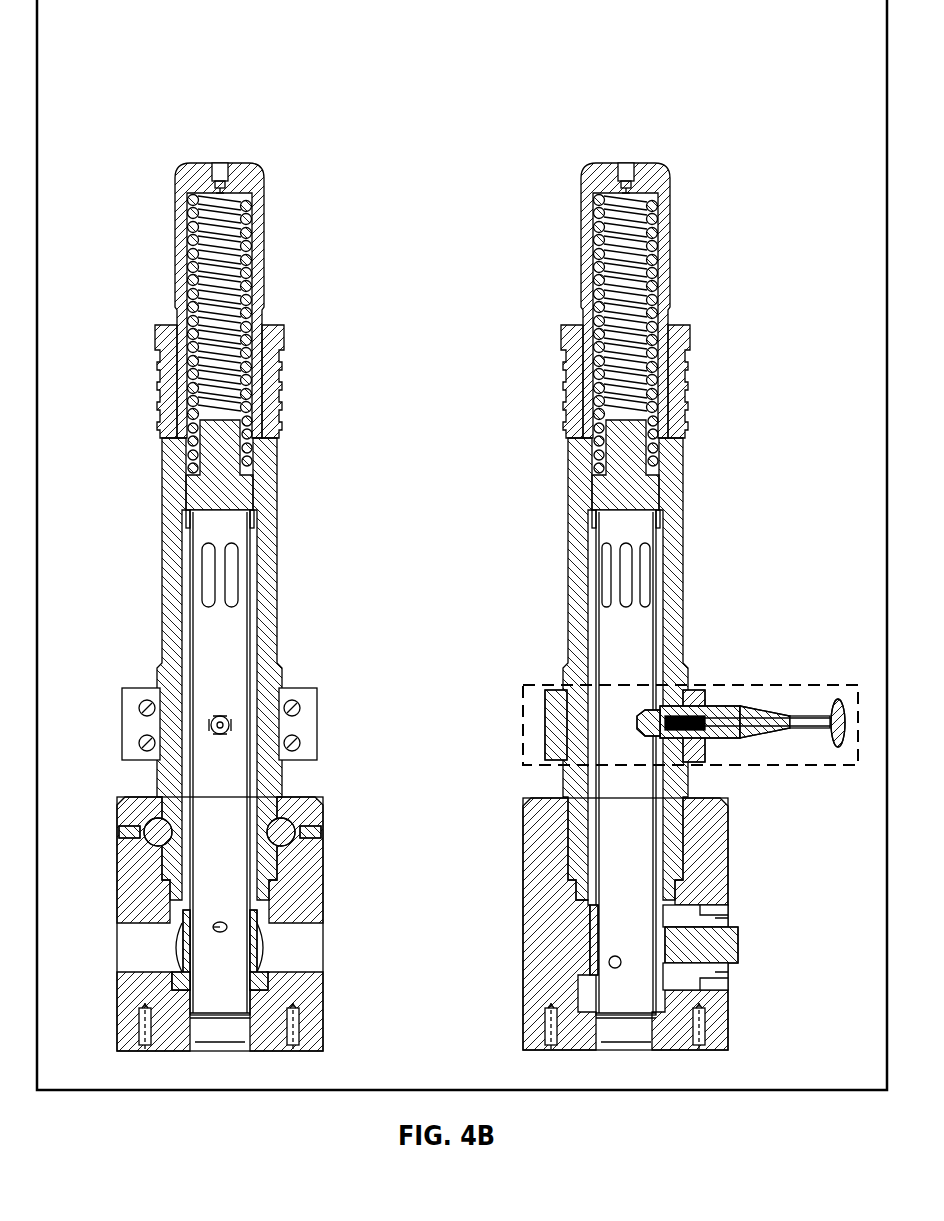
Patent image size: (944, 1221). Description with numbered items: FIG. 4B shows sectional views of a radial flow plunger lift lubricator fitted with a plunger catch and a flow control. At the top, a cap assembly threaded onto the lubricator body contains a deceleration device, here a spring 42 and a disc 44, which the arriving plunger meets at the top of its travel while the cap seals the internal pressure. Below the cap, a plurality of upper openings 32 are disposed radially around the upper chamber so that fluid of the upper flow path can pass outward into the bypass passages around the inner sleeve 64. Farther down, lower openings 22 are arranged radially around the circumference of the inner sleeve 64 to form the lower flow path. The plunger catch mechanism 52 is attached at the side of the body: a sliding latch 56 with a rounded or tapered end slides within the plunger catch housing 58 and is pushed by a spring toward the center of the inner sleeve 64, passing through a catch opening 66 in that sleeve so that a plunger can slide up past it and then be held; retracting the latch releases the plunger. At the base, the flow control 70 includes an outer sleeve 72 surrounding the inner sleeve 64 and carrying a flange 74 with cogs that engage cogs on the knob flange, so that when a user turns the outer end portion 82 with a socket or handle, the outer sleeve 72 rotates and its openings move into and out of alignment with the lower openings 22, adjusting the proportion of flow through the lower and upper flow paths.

The lower openings 22 is at (209, 926).
The upper openings 32 is at (686, 558).
The spring 42 is at (655, 334).
The disc 44 is at (673, 451).
The plunger catch mechanism 52 is at (769, 768).
The sliding latch 56 is at (684, 692).
The plunger catch housing 58 is at (770, 704).
The inner sleeve 64 is at (684, 762).
The catch opening 66 is at (207, 723).
The flow control 70 is at (663, 984).
The outer sleeve 72 is at (590, 962).
The flange 74 is at (262, 975).
The outer end portion 82 is at (718, 947).